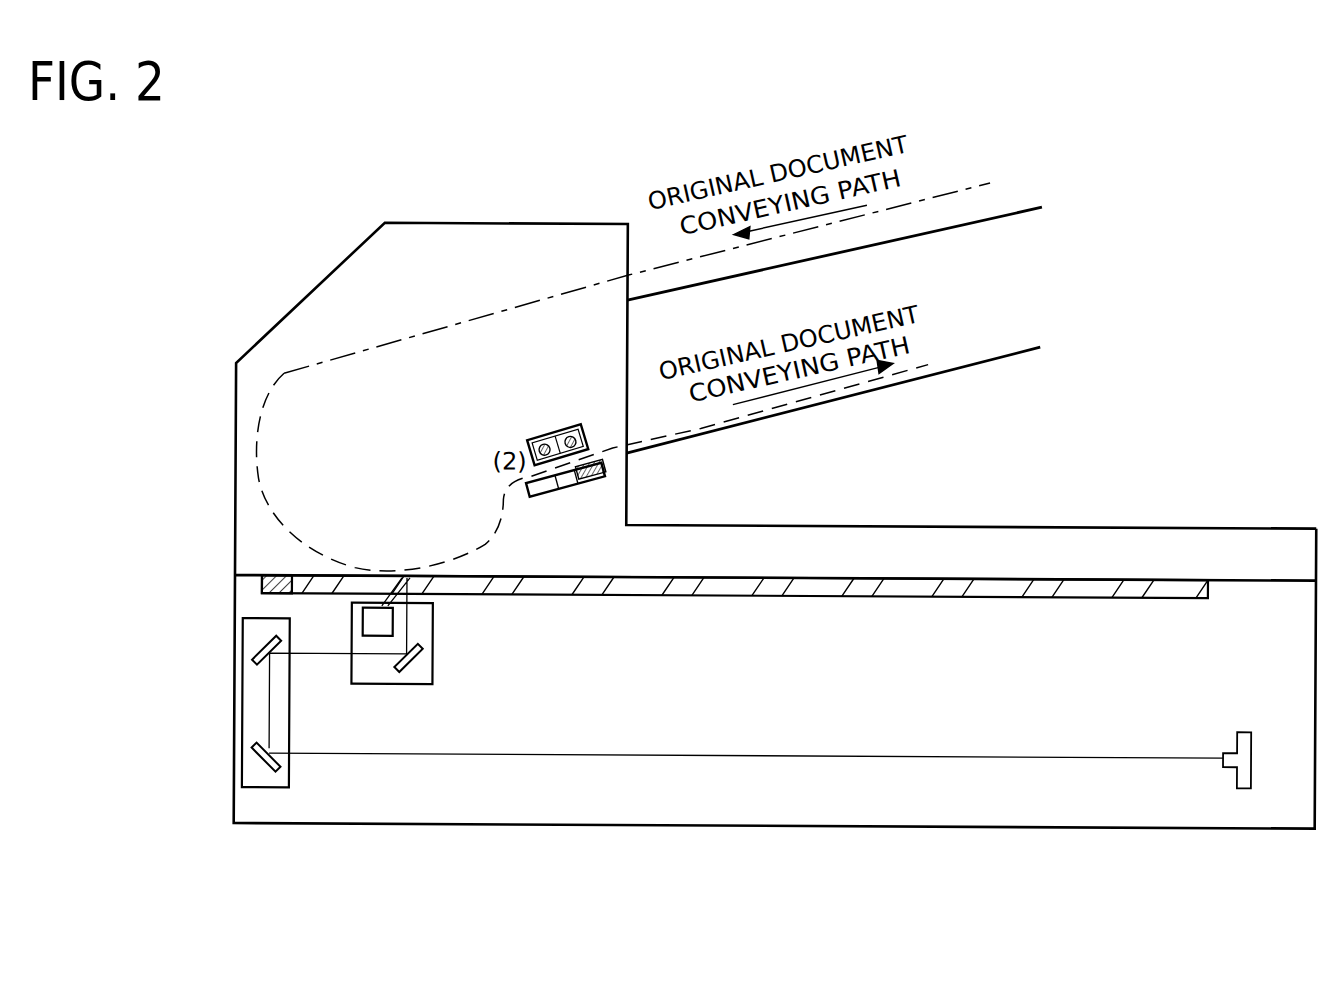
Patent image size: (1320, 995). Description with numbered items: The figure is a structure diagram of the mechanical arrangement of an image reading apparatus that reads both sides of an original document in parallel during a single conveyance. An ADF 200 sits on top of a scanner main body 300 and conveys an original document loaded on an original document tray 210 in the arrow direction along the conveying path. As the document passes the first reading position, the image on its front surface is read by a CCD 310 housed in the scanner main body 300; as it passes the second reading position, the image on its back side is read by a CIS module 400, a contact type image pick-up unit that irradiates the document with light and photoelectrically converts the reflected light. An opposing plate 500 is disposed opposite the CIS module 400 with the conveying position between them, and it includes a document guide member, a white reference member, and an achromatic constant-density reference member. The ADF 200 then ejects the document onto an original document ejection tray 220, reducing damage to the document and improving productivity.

The ADF 200 is at (235, 443).
The original document tray 210 is at (1027, 203).
The original document ejection tray 220 is at (1022, 344).
The scanner main body 300 is at (235, 604).
The CCD 310 is at (1245, 783).
The CIS module 400 is at (555, 430).
The opposing plate 500 is at (568, 485).